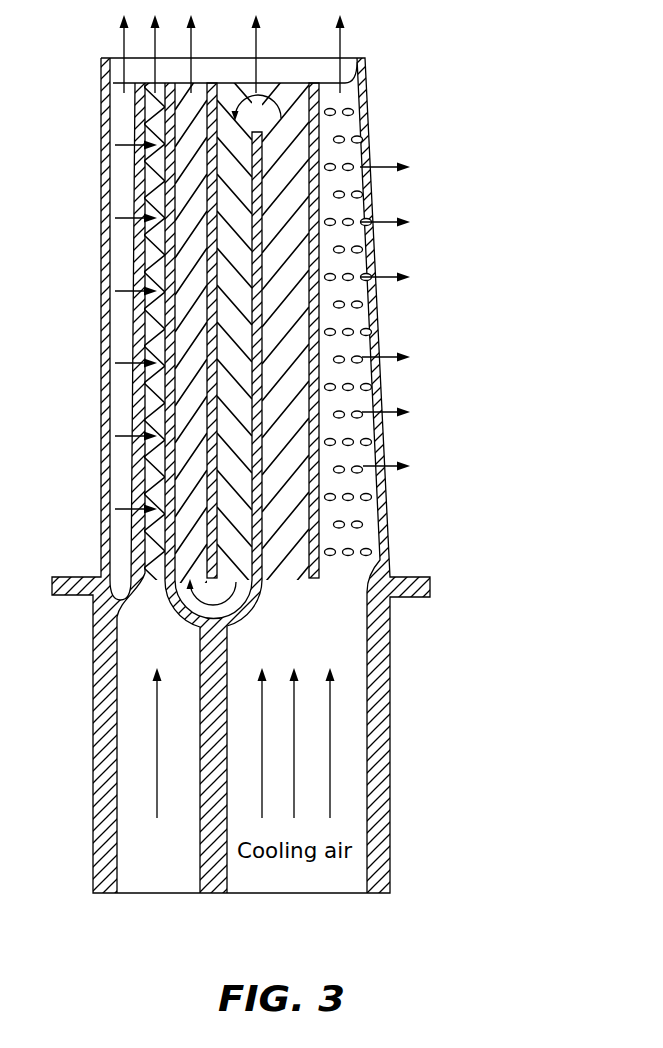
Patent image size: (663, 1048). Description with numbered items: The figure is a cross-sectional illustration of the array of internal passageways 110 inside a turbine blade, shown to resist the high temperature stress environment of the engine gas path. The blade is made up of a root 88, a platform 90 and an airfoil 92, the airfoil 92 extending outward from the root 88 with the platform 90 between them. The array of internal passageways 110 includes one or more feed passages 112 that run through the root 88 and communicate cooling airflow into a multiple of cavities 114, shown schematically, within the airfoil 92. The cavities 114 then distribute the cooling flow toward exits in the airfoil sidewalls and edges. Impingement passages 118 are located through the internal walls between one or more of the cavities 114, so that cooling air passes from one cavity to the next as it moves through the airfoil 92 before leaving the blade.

The root 88 is at (440, 730).
The platform 90 is at (438, 582).
The airfoil 92 is at (446, 233).
The array of internal passageways 110 is at (352, 204).
The feed passages 112 is at (142, 875).
The cavities 114 is at (240, 160).
The impingement passages 118 is at (140, 257).